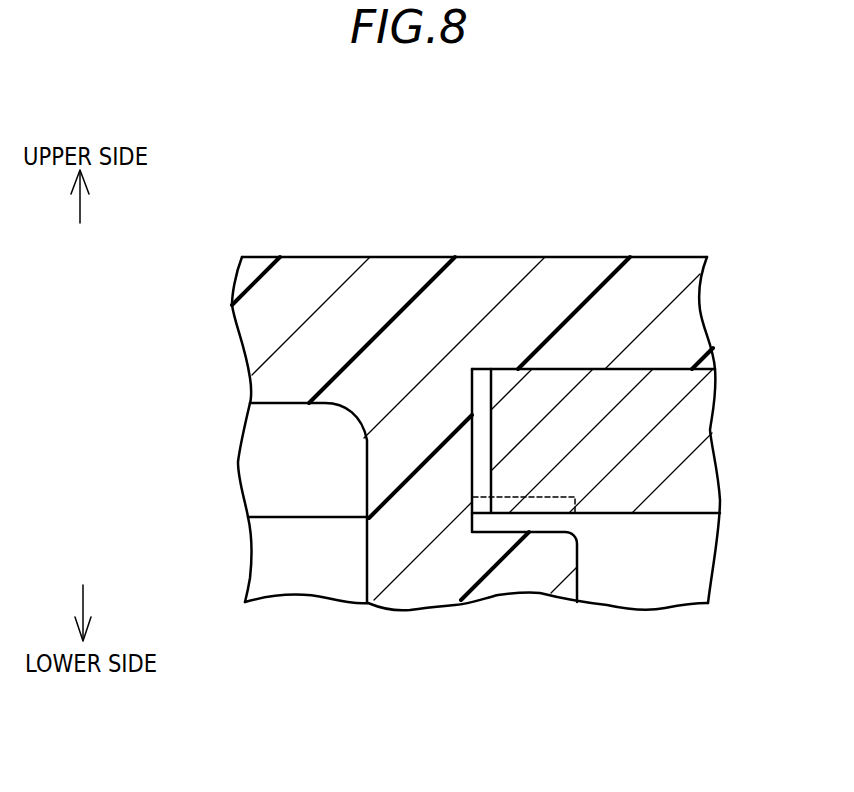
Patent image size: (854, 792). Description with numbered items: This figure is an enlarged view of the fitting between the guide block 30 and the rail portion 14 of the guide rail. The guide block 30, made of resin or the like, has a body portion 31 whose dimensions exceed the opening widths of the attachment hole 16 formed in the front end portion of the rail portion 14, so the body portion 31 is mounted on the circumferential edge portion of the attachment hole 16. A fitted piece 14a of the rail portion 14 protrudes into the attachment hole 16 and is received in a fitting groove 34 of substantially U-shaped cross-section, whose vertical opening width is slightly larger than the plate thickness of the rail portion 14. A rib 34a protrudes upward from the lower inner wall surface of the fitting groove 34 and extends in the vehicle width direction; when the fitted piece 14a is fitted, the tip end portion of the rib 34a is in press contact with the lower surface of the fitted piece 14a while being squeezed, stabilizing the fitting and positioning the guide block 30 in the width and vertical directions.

The guide block 30 is at (688, 255).
The body portion 31 is at (580, 256).
The attachment hole 16 is at (472, 438).
The rail portion 14 is at (704, 411).
The fitted piece 14a is at (471, 367).
The fitting groove 34 is at (473, 482).
The rib 34a is at (578, 520).